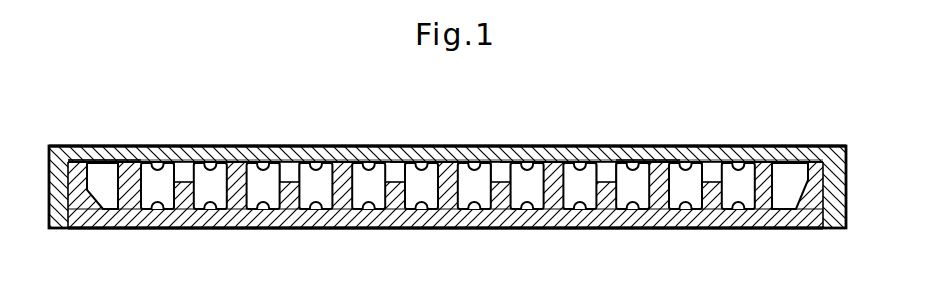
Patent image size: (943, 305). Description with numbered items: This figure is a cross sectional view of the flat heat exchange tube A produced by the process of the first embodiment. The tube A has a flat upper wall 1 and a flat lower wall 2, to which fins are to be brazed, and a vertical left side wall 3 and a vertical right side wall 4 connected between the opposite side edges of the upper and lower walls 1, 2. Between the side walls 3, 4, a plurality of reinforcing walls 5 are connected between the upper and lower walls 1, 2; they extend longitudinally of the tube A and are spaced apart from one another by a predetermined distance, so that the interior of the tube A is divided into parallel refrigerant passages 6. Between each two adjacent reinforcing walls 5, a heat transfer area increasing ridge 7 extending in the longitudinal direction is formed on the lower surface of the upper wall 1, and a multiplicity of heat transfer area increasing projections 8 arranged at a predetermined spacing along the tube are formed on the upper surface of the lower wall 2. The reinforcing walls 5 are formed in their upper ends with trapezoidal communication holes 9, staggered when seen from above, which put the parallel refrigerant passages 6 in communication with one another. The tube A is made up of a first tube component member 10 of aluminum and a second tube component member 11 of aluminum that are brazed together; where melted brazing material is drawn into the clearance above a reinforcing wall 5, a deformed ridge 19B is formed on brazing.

The upper wall 1 is at (575, 146).
The lower wall 2 is at (540, 228).
The left side wall 3 is at (62, 225).
The right side wall 4 is at (833, 197).
The reinforcing wall 5 is at (250, 173).
The refrigerant passage 6 is at (689, 190).
The heat transfer area increasing ridge 7 is at (162, 148).
The heat transfer area increasing projection 8 is at (201, 200).
The communication hole 9 is at (401, 146).
The first tube component member 10 is at (606, 228).
The second tube component member 11 is at (350, 146).
The deformed ridge 19B is at (122, 148).
The flat heat exchange tube A is at (744, 136).